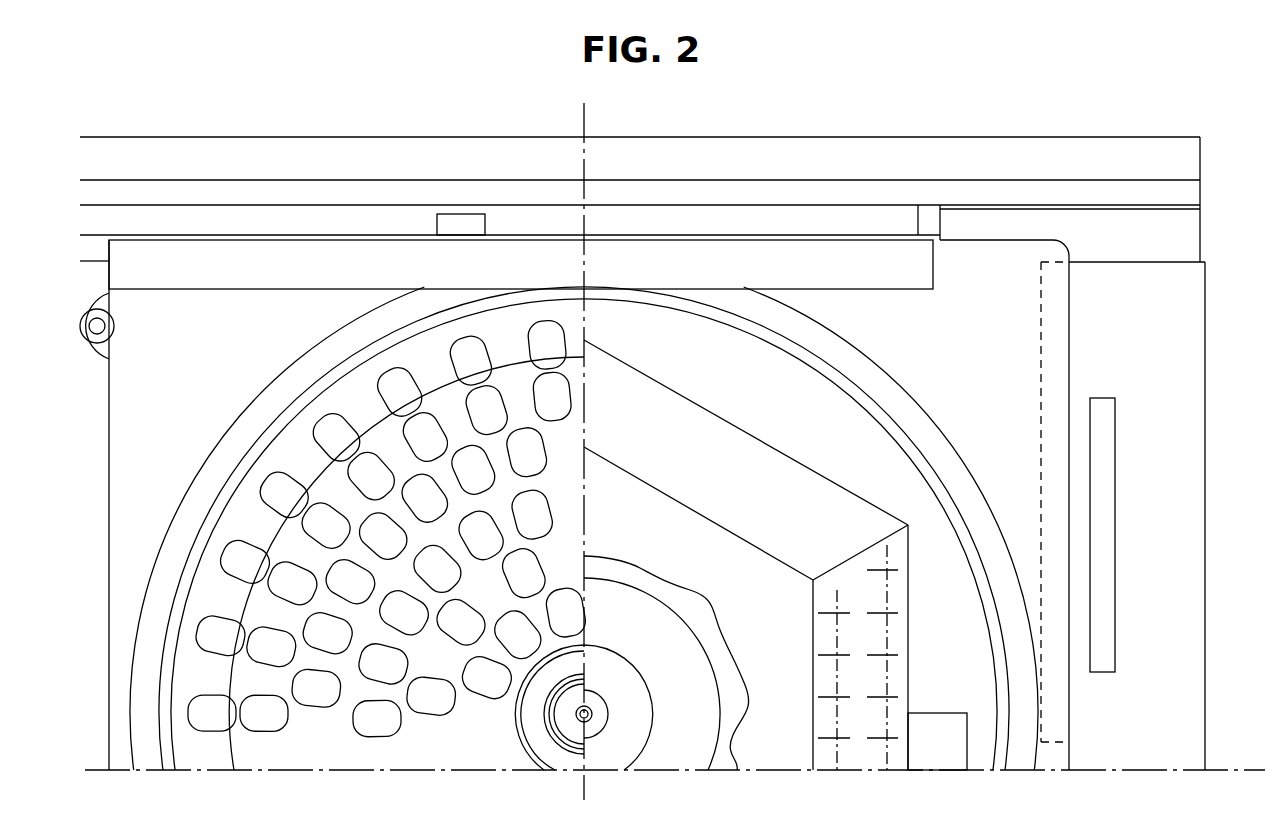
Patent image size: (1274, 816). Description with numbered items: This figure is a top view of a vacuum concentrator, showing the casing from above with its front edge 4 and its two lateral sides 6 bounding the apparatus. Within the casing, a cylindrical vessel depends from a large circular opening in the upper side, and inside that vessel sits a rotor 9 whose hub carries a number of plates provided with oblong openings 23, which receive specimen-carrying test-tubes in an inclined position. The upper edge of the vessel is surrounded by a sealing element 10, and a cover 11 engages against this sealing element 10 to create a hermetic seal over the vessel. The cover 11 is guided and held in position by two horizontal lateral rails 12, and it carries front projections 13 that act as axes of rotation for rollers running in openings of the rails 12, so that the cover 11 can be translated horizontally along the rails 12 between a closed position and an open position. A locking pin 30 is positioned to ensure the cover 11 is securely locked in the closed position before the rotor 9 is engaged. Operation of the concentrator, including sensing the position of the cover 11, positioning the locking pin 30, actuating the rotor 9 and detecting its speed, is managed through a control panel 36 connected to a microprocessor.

The front edge 4 is at (1200, 228).
The lateral sides 6 is at (768, 136).
The rotor 9 is at (512, 390).
The sealing element 10 is at (988, 543).
The cover 11 is at (962, 290).
The horizontal lateral rails 12 is at (848, 215).
The front projections 13 is at (257, 248).
The oblong openings 23 is at (423, 427).
The locking pin 30 is at (104, 326).
The control panel 36 is at (1190, 333).